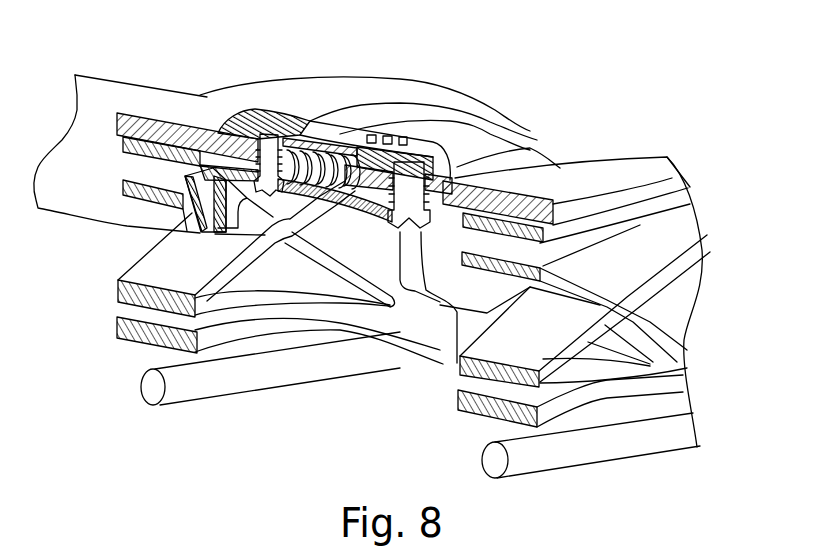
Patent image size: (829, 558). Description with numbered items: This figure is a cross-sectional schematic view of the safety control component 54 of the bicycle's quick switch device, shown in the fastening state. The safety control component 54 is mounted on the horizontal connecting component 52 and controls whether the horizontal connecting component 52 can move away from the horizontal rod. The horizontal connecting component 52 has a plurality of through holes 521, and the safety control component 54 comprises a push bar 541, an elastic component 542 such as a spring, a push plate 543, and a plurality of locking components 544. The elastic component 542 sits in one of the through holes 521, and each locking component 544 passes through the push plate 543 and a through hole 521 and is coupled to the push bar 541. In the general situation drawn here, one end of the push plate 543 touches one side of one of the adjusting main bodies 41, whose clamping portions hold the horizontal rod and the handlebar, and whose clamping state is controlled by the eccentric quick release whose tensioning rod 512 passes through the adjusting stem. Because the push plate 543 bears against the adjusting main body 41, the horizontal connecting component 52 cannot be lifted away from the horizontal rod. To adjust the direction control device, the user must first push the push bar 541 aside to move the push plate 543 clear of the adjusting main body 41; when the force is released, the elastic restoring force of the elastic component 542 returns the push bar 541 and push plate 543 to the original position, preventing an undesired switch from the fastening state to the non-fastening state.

The adjusting main body 41 is at (672, 348).
The horizontal connecting component 52 is at (500, 150).
The safety control component 54 is at (205, 97).
The tensioning rod 512 is at (193, 387).
The through hole 521 is at (313, 178).
The push bar 541 is at (308, 127).
The elastic component 542 is at (320, 183).
The push plate 543 is at (238, 184).
The locking component 544 is at (290, 133).